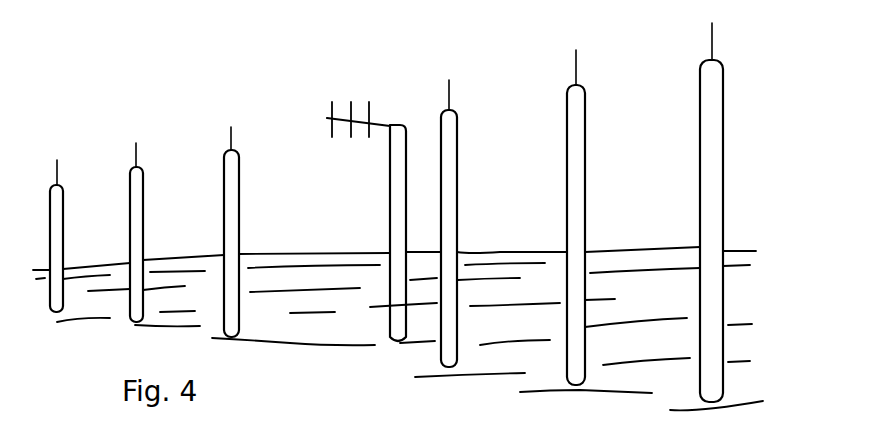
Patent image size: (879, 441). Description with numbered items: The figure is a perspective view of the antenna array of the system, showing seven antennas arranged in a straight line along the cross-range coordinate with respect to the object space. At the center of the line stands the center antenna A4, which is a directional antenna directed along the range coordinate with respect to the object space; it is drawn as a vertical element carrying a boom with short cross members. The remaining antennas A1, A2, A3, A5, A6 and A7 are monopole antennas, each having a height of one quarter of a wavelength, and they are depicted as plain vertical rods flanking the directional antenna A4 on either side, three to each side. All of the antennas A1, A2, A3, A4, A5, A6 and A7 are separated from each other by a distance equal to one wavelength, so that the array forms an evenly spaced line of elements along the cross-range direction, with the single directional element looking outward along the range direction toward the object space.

The monopole antenna A1 is at (712, 43).
The monopole antenna A2 is at (576, 70).
The monopole antenna A3 is at (449, 84).
The center directional antenna A4 is at (332, 104).
The monopole antenna A5 is at (231, 130).
The monopole antenna A6 is at (136, 147).
The monopole antenna A7 is at (57, 163).